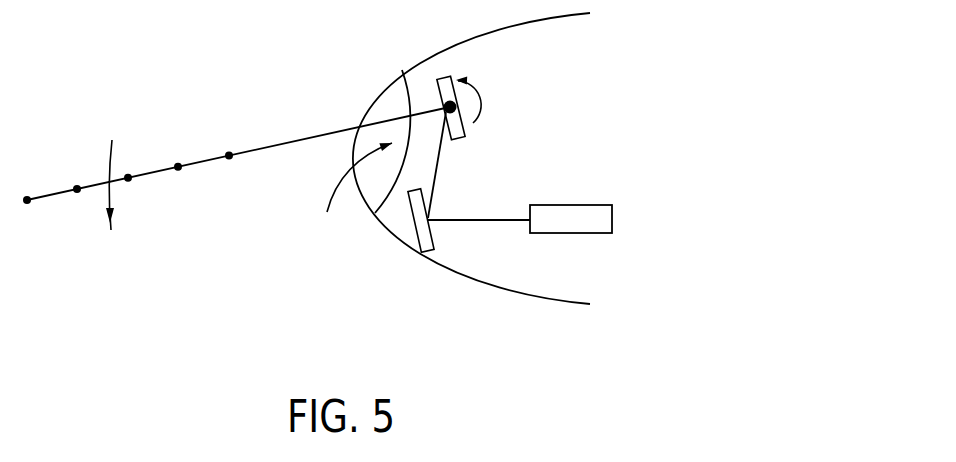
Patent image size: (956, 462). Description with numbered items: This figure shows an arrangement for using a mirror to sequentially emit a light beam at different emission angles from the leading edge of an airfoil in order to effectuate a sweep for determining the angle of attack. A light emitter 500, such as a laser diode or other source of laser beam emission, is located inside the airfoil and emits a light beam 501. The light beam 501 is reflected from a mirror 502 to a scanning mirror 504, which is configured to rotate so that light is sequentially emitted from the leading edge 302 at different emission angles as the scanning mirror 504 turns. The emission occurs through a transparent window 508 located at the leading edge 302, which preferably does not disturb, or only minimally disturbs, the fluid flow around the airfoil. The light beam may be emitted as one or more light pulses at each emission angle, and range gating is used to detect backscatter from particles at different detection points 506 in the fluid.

The leading edge 302 is at (389, 82).
The light emitter 500 is at (550, 205).
The light beam 501 is at (470, 219).
The mirror 502 is at (433, 238).
The scanning mirror 504 is at (465, 125).
The detection points 506 is at (229, 157).
The transparent window 508 is at (342, 192).